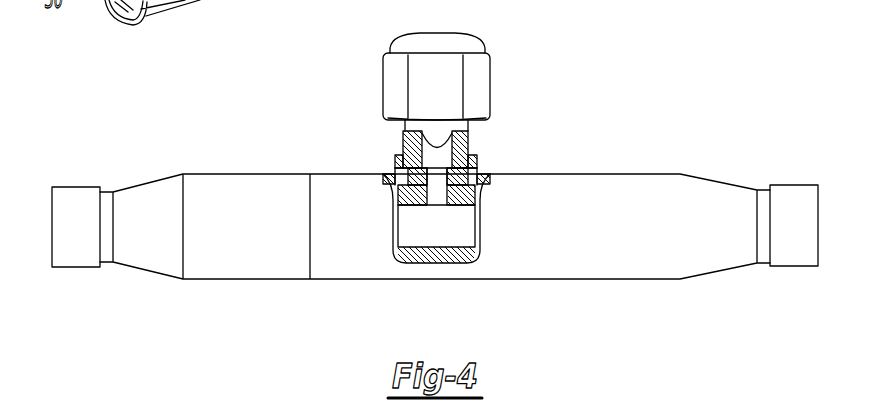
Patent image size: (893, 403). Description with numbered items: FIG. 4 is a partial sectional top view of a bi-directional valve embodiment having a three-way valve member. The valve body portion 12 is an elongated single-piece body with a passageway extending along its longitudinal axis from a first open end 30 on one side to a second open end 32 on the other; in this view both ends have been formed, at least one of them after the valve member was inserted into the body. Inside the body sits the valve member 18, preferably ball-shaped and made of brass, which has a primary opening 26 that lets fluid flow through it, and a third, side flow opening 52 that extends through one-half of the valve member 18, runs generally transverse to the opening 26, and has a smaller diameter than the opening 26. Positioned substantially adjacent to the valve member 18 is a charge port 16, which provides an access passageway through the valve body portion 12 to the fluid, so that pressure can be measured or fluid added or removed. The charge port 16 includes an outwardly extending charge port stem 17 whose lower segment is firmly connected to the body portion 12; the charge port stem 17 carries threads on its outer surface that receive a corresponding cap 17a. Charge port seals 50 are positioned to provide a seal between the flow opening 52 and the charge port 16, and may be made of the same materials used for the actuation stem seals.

The valve body portion 12 is at (522, 176).
The charge port 16 is at (479, 62).
The charge port stem 17 is at (460, 133).
The cap 17a is at (478, 70).
The valve member 18 is at (450, 257).
The opening 26 is at (467, 223).
The first open end 30 is at (52, 247).
The second open end 32 is at (808, 225).
The charge port seal 50 is at (402, 173).
The flow opening 52 is at (435, 170).